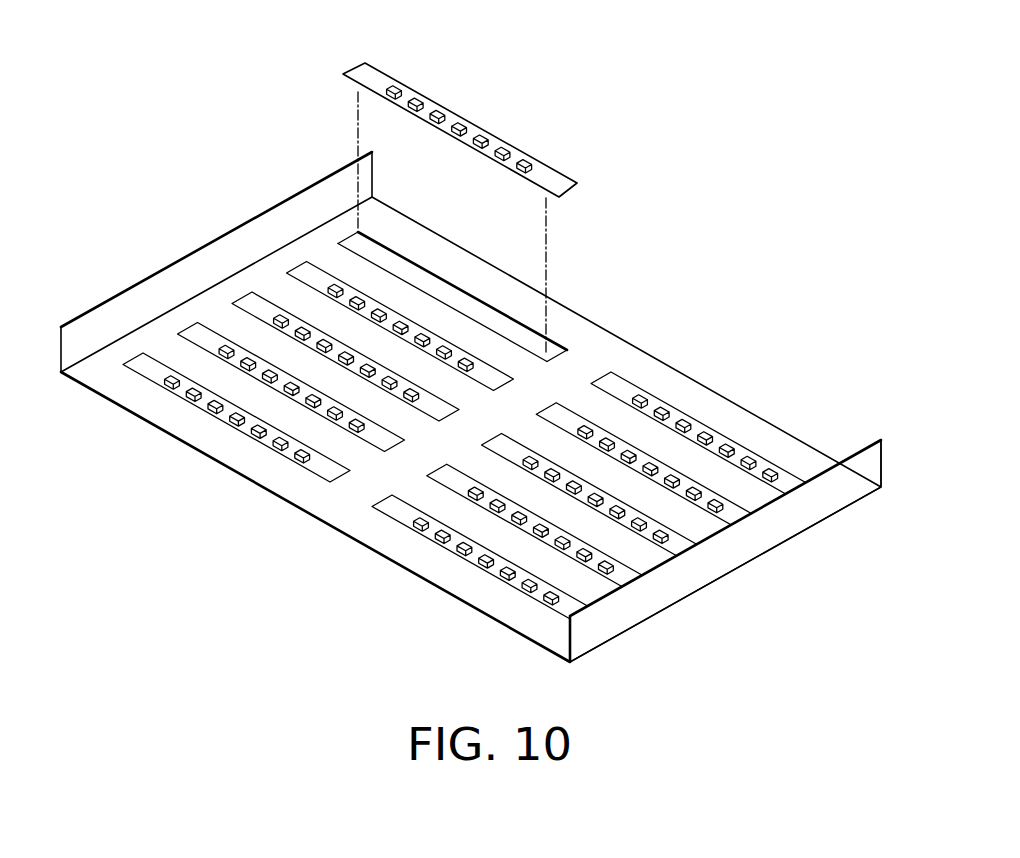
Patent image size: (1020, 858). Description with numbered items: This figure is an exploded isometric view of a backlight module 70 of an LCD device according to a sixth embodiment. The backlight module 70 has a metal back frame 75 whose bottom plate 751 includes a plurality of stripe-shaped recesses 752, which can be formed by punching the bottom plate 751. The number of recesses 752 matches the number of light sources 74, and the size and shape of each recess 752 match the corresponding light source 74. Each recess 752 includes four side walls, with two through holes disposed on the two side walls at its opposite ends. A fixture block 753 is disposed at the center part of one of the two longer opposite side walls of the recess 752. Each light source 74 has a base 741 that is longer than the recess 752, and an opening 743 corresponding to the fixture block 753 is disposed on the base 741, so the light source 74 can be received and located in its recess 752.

The backlight module 70 is at (471, 335).
The light source 74 is at (460, 101).
The base 741 is at (473, 131).
The opening 743 is at (456, 133).
The metal back frame 75 is at (793, 417).
The bottom plate 751 is at (672, 393).
The recess 752 is at (557, 347).
The fixture block 753 is at (446, 301).